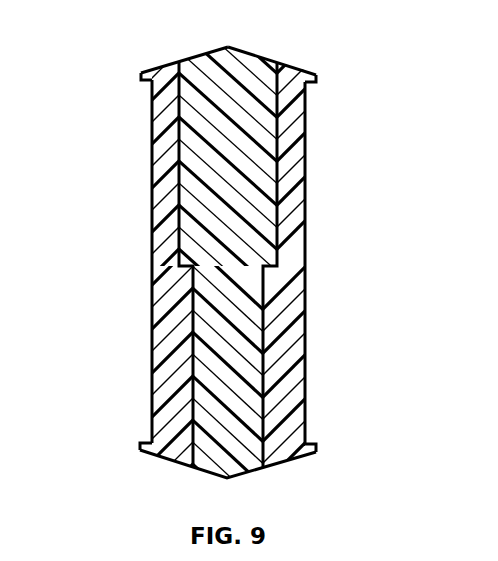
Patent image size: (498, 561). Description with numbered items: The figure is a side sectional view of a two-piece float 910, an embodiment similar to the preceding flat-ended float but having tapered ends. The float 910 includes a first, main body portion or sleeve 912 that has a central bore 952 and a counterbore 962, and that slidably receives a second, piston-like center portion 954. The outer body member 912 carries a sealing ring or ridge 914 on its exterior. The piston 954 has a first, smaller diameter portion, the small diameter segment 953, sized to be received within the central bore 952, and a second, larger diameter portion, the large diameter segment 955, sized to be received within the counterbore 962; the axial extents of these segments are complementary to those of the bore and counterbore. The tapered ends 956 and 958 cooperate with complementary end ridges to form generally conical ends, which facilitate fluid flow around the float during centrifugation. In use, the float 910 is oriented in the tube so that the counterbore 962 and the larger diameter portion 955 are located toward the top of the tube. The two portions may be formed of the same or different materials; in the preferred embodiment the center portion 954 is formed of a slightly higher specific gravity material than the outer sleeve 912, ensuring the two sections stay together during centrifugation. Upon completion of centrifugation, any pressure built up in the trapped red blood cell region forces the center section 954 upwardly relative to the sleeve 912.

The two-piece float 910 is at (364, 144).
The sleeve 912 is at (293, 228).
The sealing ring 914 is at (141, 74).
The central bore 952 is at (190, 369).
The small diameter segment 953 is at (238, 371).
The piston-like center portion 954 is at (219, 31).
The large diameter segment 955 is at (208, 150).
The tapered end 956 is at (248, 50).
The tapered end 958 is at (212, 473).
The counterbore 962 is at (178, 199).